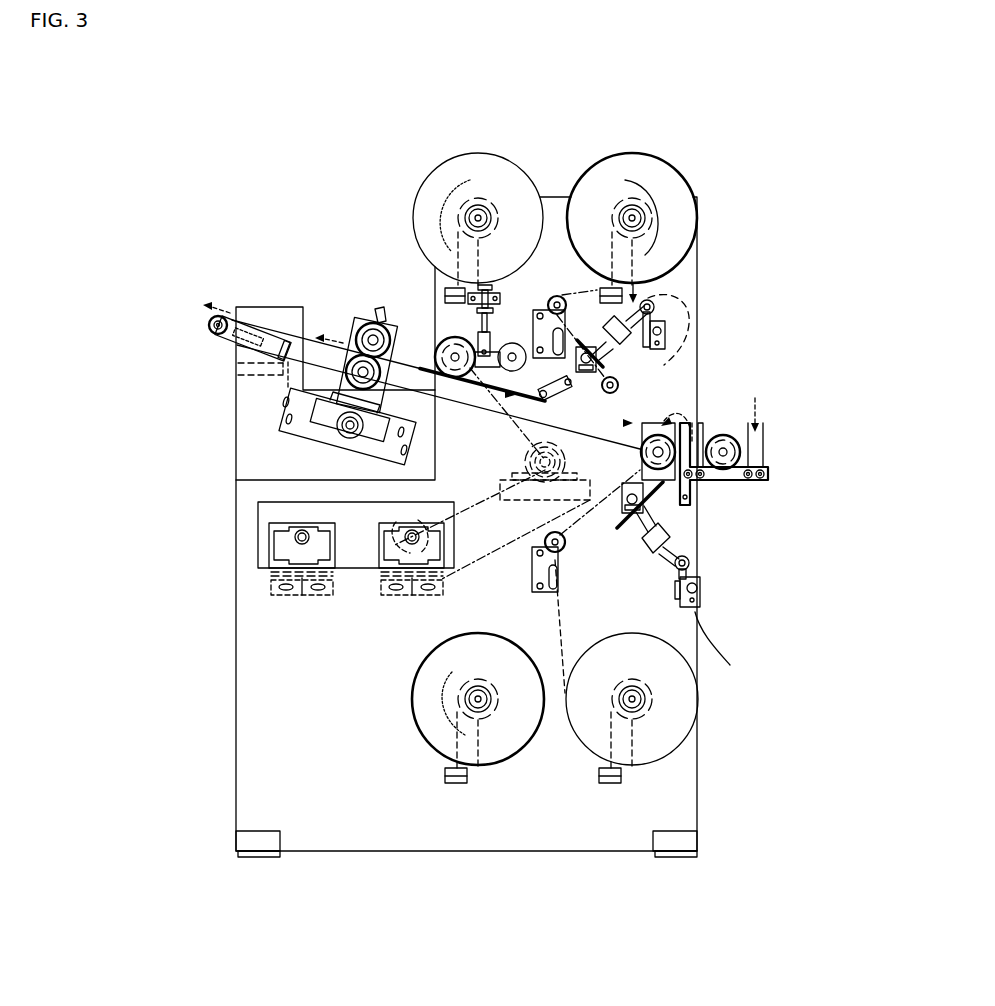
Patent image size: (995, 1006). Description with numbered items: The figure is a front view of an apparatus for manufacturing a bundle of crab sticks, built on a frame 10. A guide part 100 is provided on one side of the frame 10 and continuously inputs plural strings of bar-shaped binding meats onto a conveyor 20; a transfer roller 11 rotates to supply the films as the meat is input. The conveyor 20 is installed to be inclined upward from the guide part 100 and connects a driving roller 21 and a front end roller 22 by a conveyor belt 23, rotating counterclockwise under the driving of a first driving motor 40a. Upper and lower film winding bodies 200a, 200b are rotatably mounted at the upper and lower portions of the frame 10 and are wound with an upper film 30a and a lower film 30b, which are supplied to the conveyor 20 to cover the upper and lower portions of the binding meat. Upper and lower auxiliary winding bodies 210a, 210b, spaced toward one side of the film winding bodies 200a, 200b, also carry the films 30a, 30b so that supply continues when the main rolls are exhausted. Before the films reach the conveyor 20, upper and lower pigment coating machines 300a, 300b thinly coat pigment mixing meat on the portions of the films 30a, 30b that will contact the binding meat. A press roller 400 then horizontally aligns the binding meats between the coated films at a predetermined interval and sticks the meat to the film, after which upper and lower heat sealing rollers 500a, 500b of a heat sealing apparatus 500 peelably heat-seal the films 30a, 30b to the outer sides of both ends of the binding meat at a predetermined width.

The frame 10 is at (232, 690).
The transfer roller 11 is at (722, 476).
The conveyor 20 is at (274, 323).
The driving roller 21 is at (668, 432).
The front end roller 22 is at (209, 325).
The conveyor belt 23 is at (495, 408).
The upper film 30a is at (602, 402).
The lower film 30b is at (612, 543).
The first driving motor 40a is at (410, 515).
The guide part 100 is at (776, 444).
The upper film winding body 200a is at (668, 180).
The lower film winding body 200b is at (438, 733).
The upper auxiliary winding body 210a is at (455, 172).
The lower auxiliary winding body 210b is at (668, 723).
The upper pigment coating machine 300a is at (634, 298).
The lower pigment coating machine 300b is at (686, 548).
The press roller 400 is at (455, 337).
The heat sealing apparatus 500 is at (348, 314).
The upper heat sealing roller 500a is at (373, 322).
The lower heat sealing roller 500b is at (345, 372).